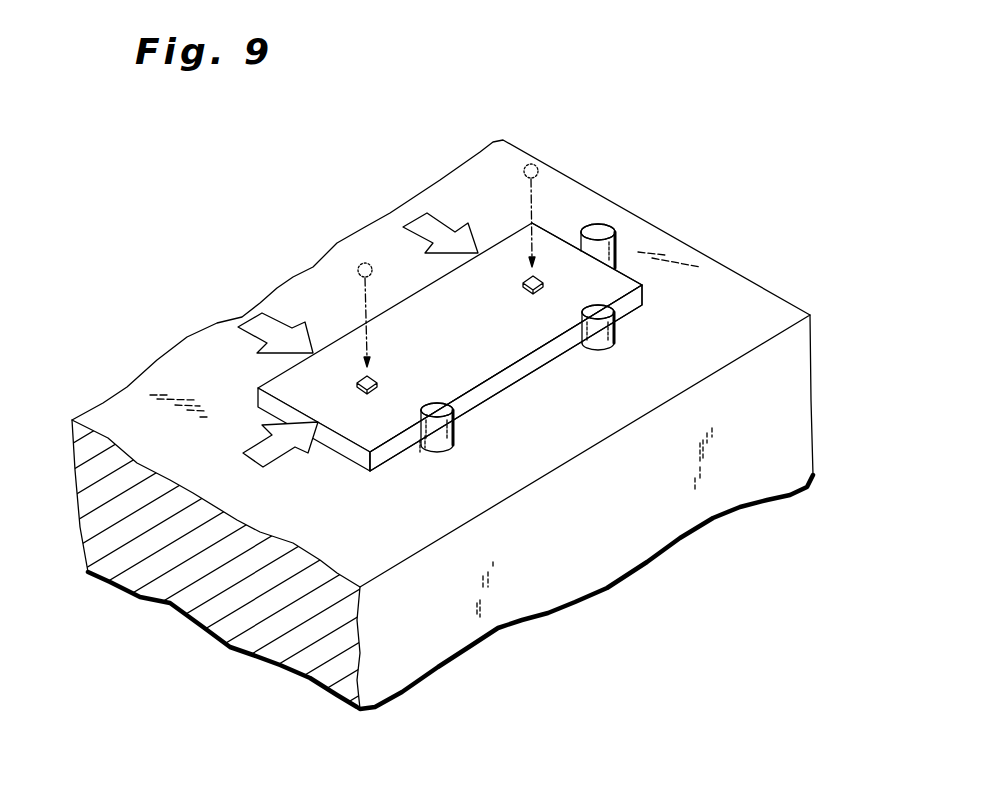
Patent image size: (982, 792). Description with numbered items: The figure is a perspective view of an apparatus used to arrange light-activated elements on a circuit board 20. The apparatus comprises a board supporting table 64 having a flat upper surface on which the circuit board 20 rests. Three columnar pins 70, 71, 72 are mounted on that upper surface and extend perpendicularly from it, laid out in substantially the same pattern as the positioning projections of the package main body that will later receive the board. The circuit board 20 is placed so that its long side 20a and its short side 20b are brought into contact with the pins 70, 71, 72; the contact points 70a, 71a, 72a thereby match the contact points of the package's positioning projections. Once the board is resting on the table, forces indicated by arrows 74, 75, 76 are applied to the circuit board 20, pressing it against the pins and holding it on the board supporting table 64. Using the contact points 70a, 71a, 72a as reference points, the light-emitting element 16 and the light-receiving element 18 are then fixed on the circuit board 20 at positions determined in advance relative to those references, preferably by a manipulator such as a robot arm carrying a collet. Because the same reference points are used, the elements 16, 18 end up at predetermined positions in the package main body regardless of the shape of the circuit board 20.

The light-emitting element 16 is at (360, 379).
The light-receiving element 18 is at (448, 265).
The circuit board 20 is at (480, 365).
The long side 20a is at (538, 363).
The short side 20b is at (558, 232).
The board supporting table 64 is at (735, 282).
The columnar pin 70 is at (617, 248).
The contact point of pin 70a is at (583, 232).
The columnar pin 71 is at (438, 445).
The contact point of pin 71a is at (436, 408).
The columnar pin 72 is at (615, 331).
The contact point of pin 72a is at (592, 311).
The arrow 74 is at (433, 217).
The arrow 75 is at (262, 324).
The arrow 76 is at (270, 452).